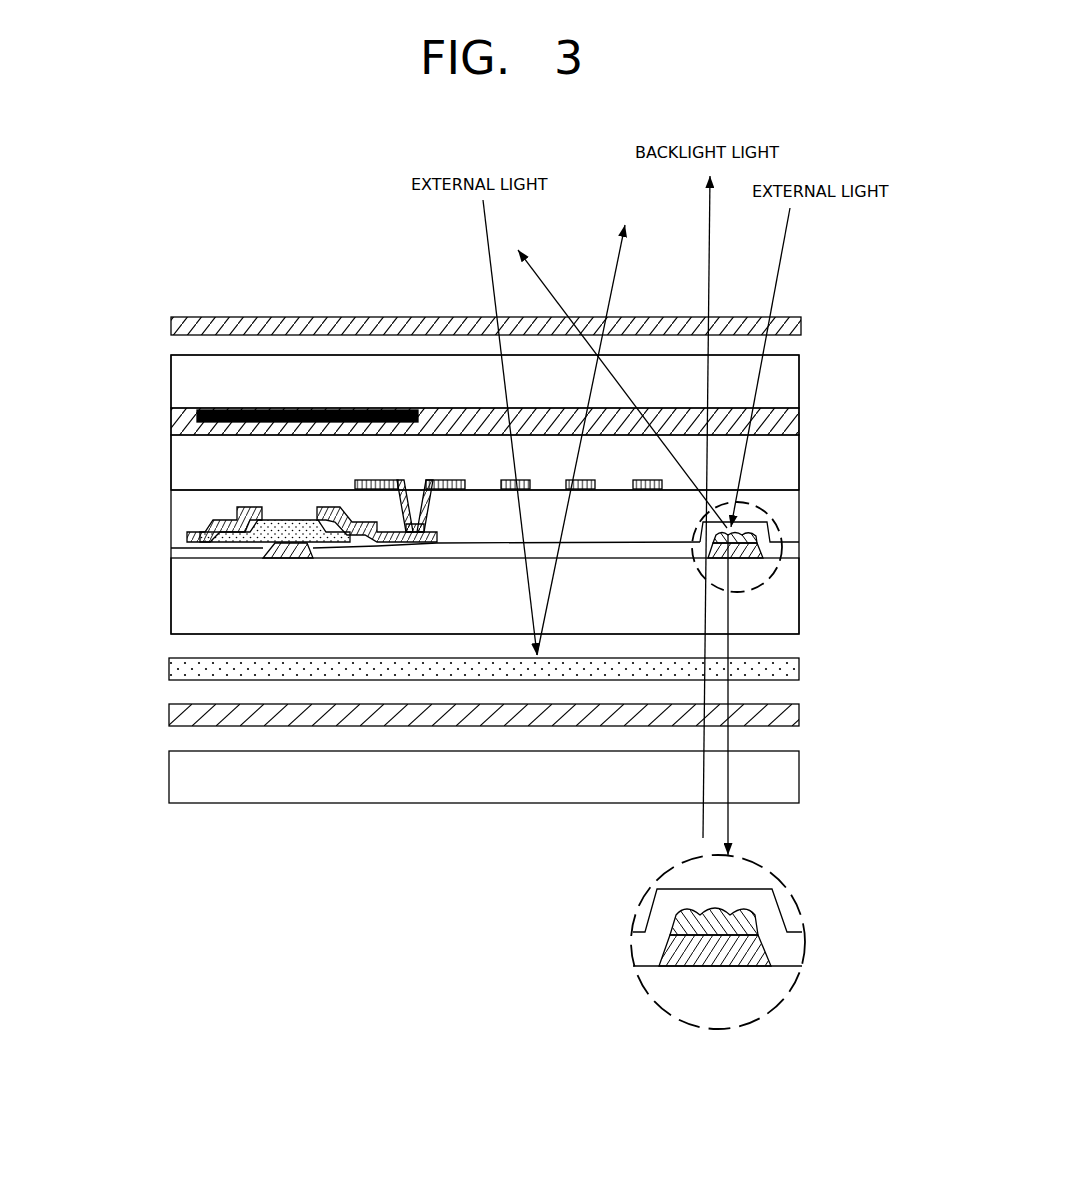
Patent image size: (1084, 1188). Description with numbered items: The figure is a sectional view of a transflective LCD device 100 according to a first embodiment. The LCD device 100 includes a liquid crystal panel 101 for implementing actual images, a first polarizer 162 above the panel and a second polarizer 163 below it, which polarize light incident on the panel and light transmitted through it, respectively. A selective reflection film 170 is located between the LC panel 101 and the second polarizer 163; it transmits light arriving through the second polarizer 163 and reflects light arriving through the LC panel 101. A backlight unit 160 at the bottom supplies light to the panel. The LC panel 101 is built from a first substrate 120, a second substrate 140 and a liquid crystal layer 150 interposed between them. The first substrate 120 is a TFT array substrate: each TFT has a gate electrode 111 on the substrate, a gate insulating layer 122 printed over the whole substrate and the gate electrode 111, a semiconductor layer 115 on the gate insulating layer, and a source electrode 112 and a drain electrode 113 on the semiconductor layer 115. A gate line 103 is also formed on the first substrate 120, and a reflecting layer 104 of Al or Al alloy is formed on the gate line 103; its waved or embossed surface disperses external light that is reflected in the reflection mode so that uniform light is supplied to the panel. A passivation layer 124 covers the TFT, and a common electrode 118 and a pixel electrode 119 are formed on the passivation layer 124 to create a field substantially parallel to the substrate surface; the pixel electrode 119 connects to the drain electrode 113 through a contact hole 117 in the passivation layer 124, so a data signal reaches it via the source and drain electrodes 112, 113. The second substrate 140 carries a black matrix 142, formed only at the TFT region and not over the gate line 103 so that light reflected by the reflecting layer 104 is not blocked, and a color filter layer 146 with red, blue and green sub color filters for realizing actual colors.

The LCD device 100 is at (819, 286).
The liquid crystal panel 101 is at (808, 381).
The gate line 103 is at (746, 562).
The reflecting layer 104 is at (759, 536).
The gate electrode 111 is at (190, 548).
The source electrode 112 is at (222, 524).
The drain electrode 113 is at (323, 510).
The semiconductor layer 115 is at (202, 533).
The contact hole 117 is at (412, 478).
The common electrode 118 is at (505, 490).
The pixel electrode 119 is at (582, 490).
The first substrate 120 is at (171, 597).
The gate insulating layer 122 is at (783, 550).
The passivation layer 124 is at (777, 517).
The second substrate 140 is at (171, 385).
The black matrix 142 is at (357, 410).
The color filter layer 146 is at (478, 425).
The liquid crystal layer 150 is at (171, 450).
The backlight unit 160 is at (169, 778).
The first polarizer 162 is at (171, 322).
The second polarizer 163 is at (169, 714).
The selective reflection film 170 is at (169, 668).